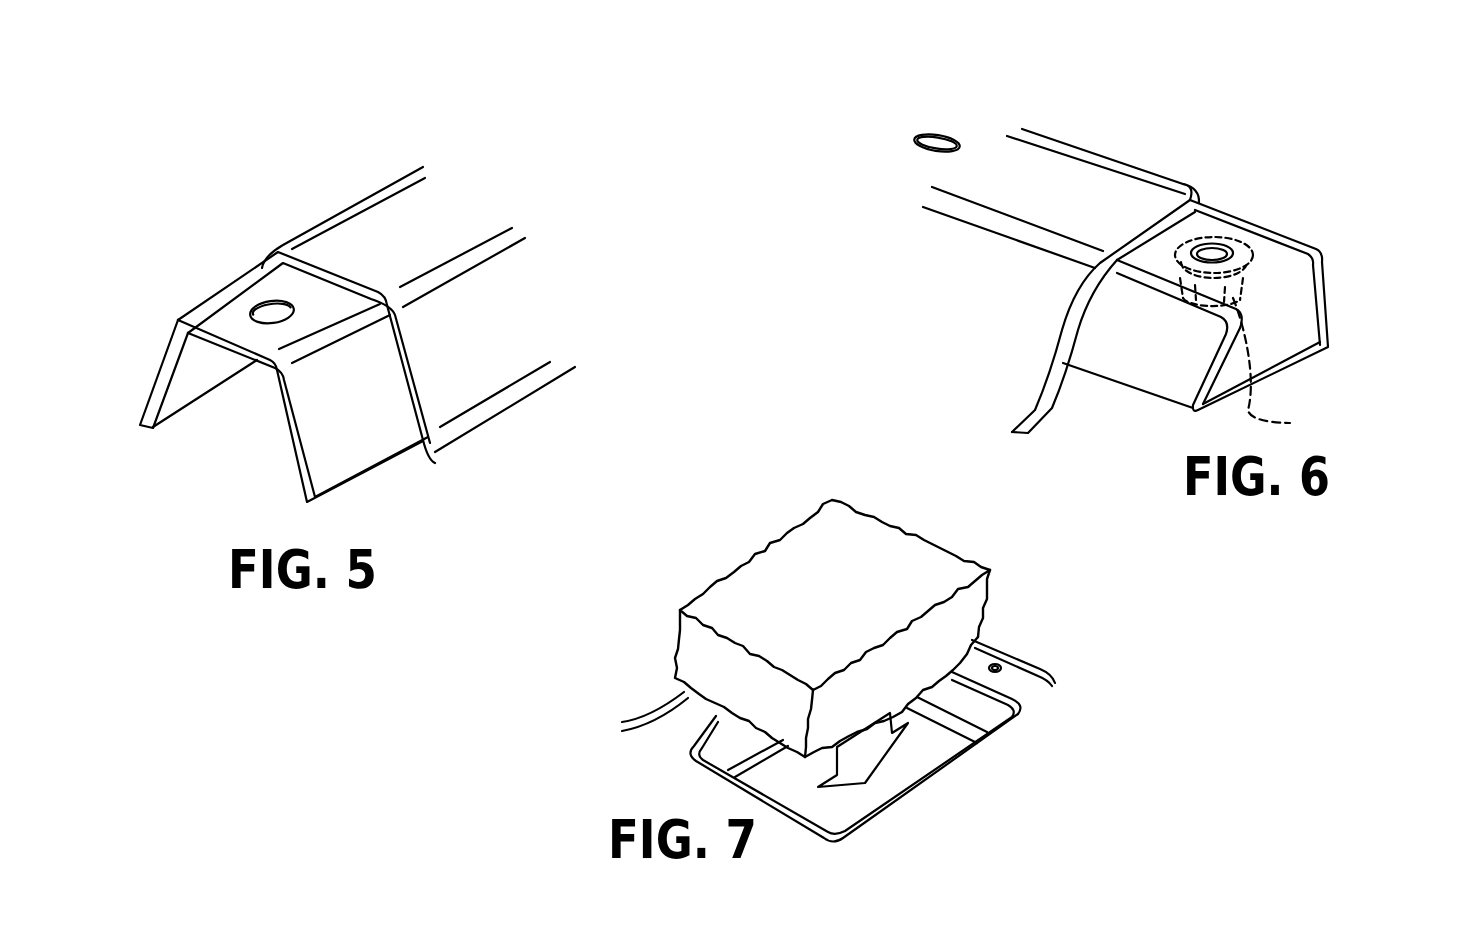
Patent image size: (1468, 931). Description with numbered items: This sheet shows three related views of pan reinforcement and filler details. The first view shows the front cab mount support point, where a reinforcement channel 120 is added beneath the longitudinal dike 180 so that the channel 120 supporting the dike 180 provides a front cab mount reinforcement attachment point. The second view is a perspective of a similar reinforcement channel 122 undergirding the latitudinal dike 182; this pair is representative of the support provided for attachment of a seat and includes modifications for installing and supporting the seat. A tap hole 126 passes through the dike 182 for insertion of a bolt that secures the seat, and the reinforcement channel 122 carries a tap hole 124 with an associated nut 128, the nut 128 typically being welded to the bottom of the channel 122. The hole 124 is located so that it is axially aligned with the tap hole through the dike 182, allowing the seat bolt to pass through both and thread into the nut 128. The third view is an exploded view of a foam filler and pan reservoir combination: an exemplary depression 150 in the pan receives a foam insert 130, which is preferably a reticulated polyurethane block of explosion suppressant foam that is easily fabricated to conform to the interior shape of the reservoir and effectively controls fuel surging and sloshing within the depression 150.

In FIG. 5, the reinforcement channel 120 is at (253, 445).
In FIG. 6, the reinforcement channel 122 is at (1327, 316).
In FIG. 6, the tap hole 124 is at (1230, 243).
In FIG. 6, the tap hole 126 is at (950, 140).
In FIG. 6, the nut 128 is at (1289, 365).
In FIG. 7, the foam insert 130 is at (790, 530).
In FIG. 7, the depression 150 is at (858, 802).
In FIG. 5, the longitudinal dike 180 is at (363, 198).
In FIG. 6, the latitudinal dike 182 is at (1093, 155).